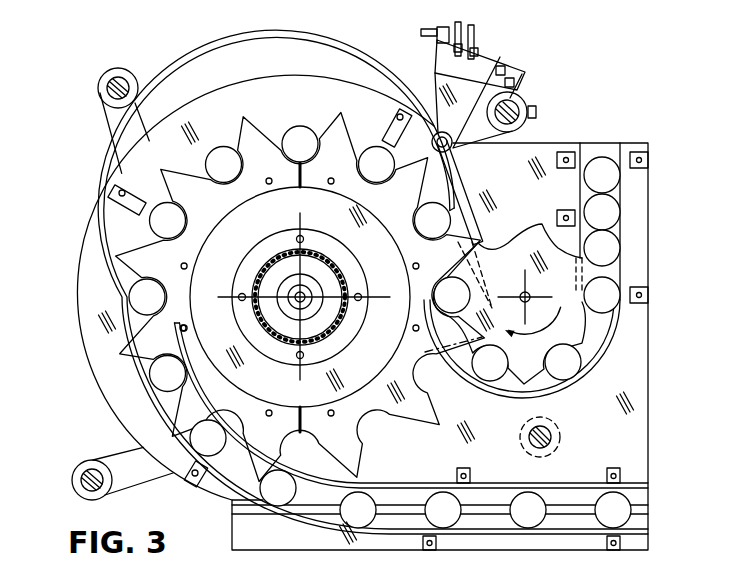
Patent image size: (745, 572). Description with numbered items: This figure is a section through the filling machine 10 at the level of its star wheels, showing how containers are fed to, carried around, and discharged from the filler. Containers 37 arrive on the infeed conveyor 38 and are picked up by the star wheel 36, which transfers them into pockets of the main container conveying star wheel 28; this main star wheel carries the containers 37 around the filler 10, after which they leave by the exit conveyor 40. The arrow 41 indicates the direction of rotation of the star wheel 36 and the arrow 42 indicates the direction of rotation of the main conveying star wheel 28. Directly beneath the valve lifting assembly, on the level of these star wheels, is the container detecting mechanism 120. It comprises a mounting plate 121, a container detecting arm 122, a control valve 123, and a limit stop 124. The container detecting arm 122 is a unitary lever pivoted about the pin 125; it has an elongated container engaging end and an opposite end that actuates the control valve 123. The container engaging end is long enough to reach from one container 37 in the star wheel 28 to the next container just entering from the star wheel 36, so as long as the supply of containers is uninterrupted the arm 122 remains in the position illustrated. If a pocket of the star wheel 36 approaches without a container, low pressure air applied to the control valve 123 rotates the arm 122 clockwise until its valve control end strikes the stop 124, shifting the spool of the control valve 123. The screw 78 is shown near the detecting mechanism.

The filling machine 10 is at (206, 99).
The container conveying star wheel 28 is at (124, 350).
The star wheel 36 is at (519, 355).
The containers 37 is at (612, 247).
The infeed conveyor 38 is at (618, 193).
The exit conveyor 40 is at (396, 522).
The arrow 41 is at (592, 318).
The arrow 42 is at (207, 312).
The clamp screw 78 is at (521, 124).
The container detecting mechanism 120 is at (435, 98).
The mounting plate 121 is at (508, 57).
The container detecting arm 122 is at (463, 188).
The control valve 123 is at (433, 36).
The limit stop 124 is at (527, 91).
The pin 125 is at (456, 152).